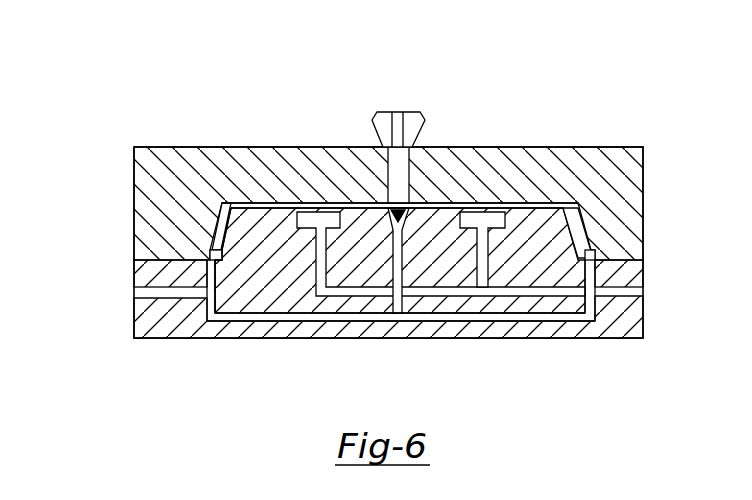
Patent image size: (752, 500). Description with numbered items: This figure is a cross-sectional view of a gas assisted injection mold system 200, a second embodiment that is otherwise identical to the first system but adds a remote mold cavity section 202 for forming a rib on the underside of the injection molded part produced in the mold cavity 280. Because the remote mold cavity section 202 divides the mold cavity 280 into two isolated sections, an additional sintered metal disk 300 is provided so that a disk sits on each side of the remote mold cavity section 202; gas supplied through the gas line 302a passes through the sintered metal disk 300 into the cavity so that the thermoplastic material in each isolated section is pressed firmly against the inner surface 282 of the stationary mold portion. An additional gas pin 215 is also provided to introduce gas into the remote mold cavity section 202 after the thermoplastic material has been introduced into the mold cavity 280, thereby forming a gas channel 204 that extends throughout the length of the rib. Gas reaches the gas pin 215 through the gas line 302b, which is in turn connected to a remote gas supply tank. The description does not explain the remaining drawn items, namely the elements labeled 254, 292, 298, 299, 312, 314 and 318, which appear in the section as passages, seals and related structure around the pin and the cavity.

The gas assisted injection mold system 200 is at (103, 88).
The remote mold cavity section 202 is at (404, 222).
The gas channel 204 is at (408, 210).
The gas pin 215 is at (390, 236).
The passage 254 is at (287, 204).
The mold cavity 280 is at (590, 240).
The inner surface 282 is at (267, 250).
The adjustment screw 292 is at (410, 120).
The seal 298 is at (215, 250).
The passage 299 is at (600, 270).
The sintered metal disk 300 is at (480, 214).
The gas line 302a is at (500, 292).
The gas line 302b is at (210, 320).
The plunger wall 312 is at (218, 252).
The channel wall 314 is at (575, 207).
The seal seat 318 is at (207, 253).